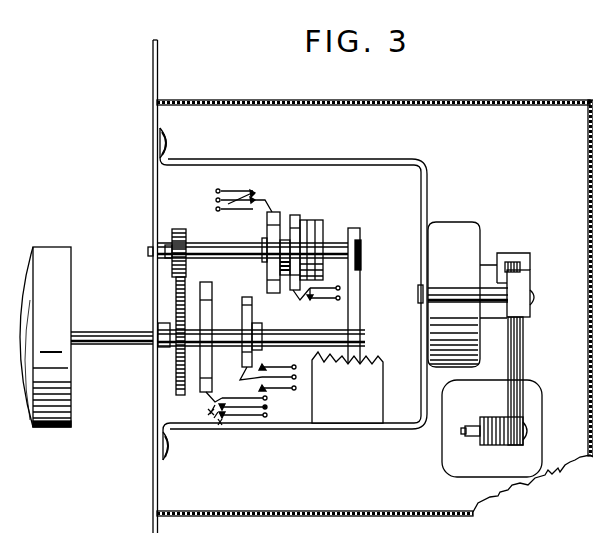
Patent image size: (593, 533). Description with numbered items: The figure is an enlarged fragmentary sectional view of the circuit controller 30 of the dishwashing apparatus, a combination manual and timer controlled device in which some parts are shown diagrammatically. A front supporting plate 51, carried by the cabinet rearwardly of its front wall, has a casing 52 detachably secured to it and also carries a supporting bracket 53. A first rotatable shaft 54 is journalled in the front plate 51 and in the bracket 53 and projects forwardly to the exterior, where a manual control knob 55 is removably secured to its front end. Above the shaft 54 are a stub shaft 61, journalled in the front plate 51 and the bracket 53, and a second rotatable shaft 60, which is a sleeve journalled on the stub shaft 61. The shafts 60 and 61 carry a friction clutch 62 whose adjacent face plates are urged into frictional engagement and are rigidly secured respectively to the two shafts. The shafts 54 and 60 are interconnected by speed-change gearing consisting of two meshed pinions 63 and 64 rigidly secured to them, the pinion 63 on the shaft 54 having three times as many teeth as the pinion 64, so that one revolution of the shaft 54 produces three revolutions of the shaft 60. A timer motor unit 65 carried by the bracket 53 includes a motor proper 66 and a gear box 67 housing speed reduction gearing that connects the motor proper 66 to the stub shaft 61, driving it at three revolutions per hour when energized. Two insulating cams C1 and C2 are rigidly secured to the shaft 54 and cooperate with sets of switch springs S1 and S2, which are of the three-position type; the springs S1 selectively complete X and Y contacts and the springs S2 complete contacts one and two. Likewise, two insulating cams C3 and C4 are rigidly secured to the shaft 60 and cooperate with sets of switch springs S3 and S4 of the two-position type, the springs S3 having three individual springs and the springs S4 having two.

The circuit controller 30 is at (490, 94).
The front supporting plate 51 is at (152, 88).
The casing 52 is at (513, 106).
The supporting bracket 53 is at (330, 158).
The first rotatable shaft 54 is at (96, 333).
The manual control knob 55 is at (55, 256).
The second rotatable shaft 60 is at (214, 247).
The stub shaft 61 is at (150, 250).
The friction clutch 62 is at (314, 222).
The pinion 63 is at (176, 297).
The pinion 64 is at (181, 228).
The timer motor unit 65 is at (509, 213).
The motor proper 66 is at (525, 360).
The gear box 67 is at (440, 222).
The insulating cam C1 is at (209, 296).
The insulating cam C2 is at (252, 301).
The insulating cam C3 is at (275, 212).
The insulating cam C4 is at (294, 215).
The set of switch springs S1 is at (236, 402).
The set of switch springs S2 is at (268, 371).
The set of switch springs S3 is at (244, 194).
The set of switch springs S4 is at (316, 301).